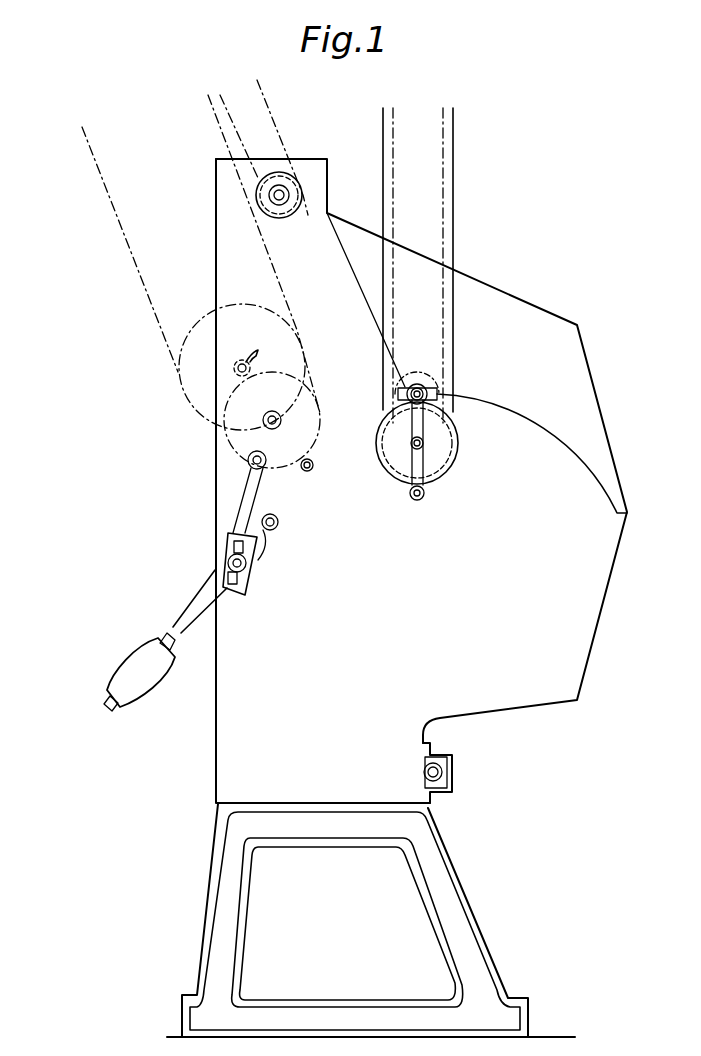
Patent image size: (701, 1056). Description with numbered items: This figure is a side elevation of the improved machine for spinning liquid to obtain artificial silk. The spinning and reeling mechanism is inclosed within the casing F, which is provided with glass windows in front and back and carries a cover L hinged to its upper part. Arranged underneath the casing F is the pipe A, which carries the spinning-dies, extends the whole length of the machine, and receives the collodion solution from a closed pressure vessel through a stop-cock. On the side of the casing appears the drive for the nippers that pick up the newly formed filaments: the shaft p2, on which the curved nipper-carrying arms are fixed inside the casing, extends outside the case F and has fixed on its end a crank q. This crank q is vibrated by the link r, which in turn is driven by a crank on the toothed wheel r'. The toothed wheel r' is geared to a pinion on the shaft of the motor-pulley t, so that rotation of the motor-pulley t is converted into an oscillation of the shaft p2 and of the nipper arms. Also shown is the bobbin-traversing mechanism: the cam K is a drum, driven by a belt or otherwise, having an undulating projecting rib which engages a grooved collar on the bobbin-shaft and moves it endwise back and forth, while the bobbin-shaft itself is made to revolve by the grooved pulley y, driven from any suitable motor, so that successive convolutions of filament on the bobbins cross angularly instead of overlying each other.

The casing F is at (421, 481).
The cover L is at (505, 310).
The pipe A is at (442, 772).
The motor-pulley t is at (249, 382).
The cam K is at (417, 450).
The grooved pulley y is at (417, 384).
The link r is at (243, 492).
The toothed wheel r' is at (297, 456).
The shaft p2 is at (280, 520).
The crank q is at (188, 622).